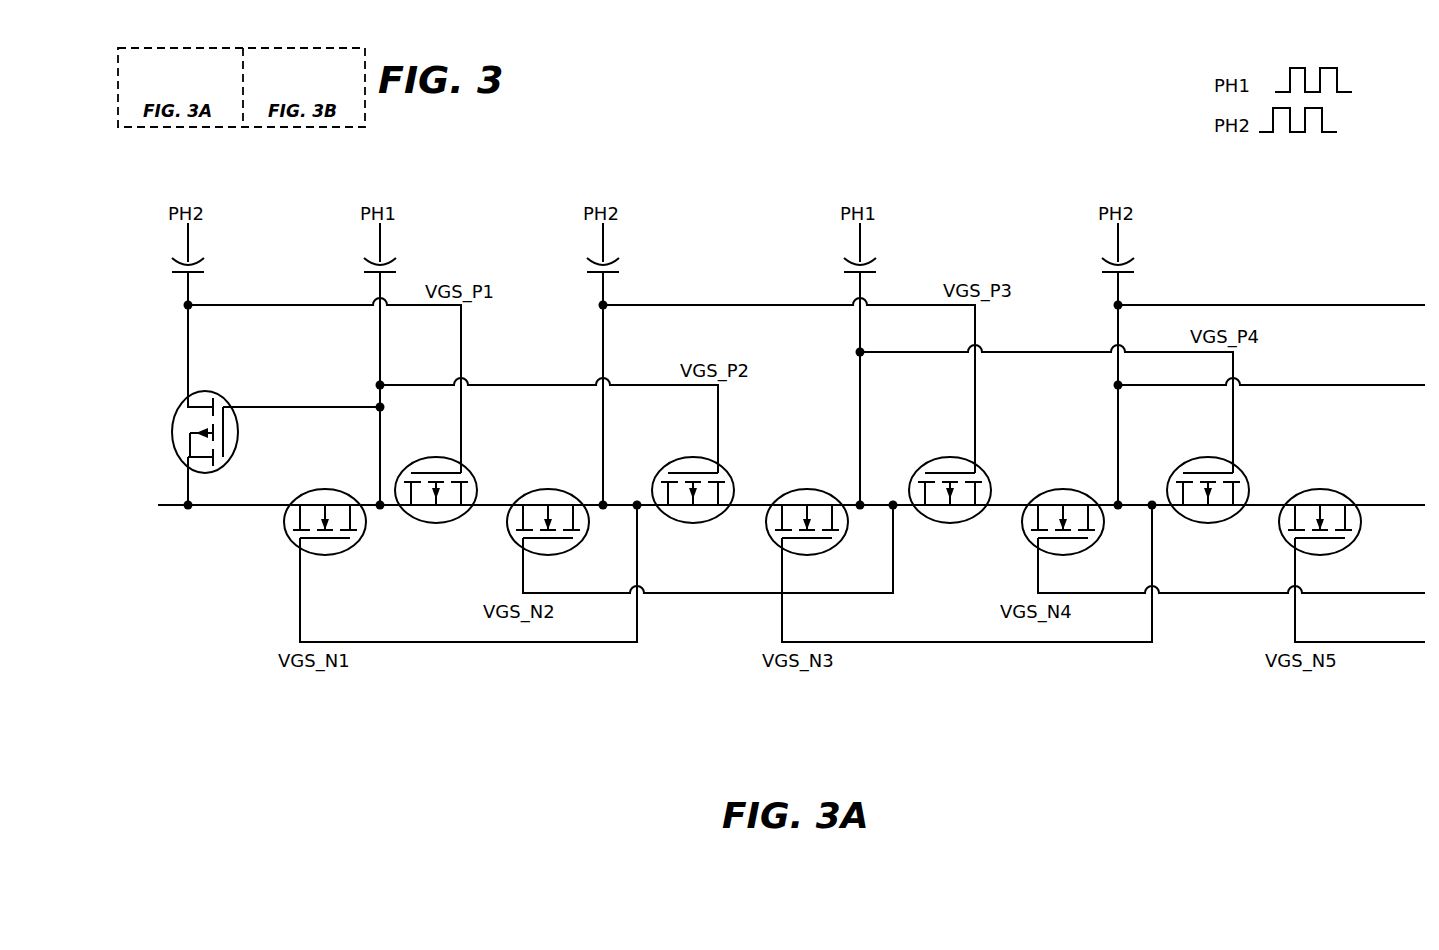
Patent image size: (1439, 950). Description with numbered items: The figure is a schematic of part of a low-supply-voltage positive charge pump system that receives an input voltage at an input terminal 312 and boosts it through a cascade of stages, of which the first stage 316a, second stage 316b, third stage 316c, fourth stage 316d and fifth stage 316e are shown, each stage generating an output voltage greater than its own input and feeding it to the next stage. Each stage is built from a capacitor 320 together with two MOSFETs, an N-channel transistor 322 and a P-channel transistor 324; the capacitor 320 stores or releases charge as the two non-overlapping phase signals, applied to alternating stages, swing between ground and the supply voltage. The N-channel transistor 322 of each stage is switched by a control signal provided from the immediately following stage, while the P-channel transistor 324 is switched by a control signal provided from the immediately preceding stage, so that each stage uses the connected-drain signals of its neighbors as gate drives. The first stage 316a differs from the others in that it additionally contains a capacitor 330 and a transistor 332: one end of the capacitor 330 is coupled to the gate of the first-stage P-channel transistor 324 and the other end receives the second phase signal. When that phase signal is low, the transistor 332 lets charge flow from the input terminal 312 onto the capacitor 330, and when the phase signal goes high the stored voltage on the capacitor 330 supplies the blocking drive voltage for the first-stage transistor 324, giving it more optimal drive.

The input terminal 312 is at (174, 500).
The first charge pump stage 316a is at (322, 265).
The second charge pump stage 316b is at (513, 265).
The third charge pump stage 316c is at (771, 265).
The fourth charge pump stage 316d is at (1030, 265).
The fifth charge pump stage 316e is at (1285, 265).
The capacitor 320 is at (396, 272).
The N-channel MOSFET 322 is at (318, 490).
The P-channel MOSFET 324 is at (446, 457).
The capacitor 330 is at (204, 272).
The transistor 332 is at (180, 410).